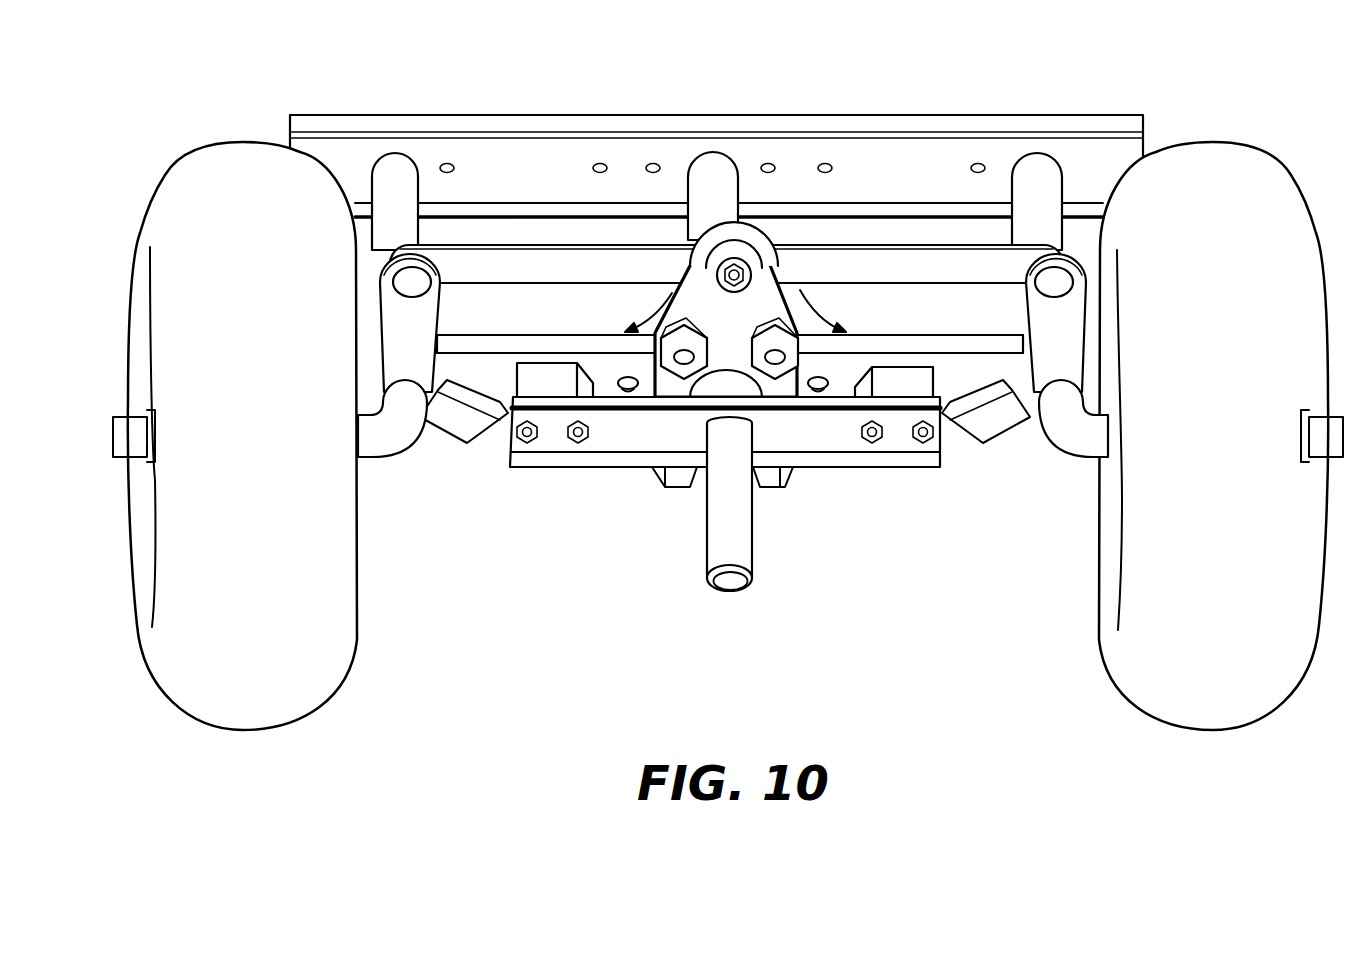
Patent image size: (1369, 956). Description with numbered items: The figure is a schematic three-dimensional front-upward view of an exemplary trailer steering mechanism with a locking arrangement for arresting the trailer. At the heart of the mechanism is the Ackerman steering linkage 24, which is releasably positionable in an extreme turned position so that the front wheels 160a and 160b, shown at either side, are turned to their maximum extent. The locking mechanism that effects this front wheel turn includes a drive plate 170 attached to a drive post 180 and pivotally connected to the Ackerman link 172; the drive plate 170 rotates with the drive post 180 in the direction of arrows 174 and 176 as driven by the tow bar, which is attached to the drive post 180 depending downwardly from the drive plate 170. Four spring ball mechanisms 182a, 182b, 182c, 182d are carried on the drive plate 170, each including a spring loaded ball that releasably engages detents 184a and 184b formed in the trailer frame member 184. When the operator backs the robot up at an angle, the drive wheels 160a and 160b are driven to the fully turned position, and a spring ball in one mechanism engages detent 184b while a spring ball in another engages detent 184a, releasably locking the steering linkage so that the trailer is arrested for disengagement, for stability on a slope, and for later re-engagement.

The Ackerman steering linkage 24 is at (488, 608).
The front wheel 160a is at (350, 668).
The front wheel 160b is at (1113, 690).
The drive plate 170 is at (745, 309).
The Ackerman link 172 is at (502, 247).
The arrow 174 is at (636, 300).
The arrow 176 is at (802, 290).
The drive post 180 is at (750, 592).
The spring ball mechanism 182a is at (780, 325).
The spring ball mechanism 182b is at (782, 486).
The spring ball mechanism 182c is at (665, 486).
The spring ball mechanism 182d is at (688, 322).
The trailer frame member 184 is at (938, 340).
The detent 184a is at (626, 390).
The detent 184b is at (820, 392).